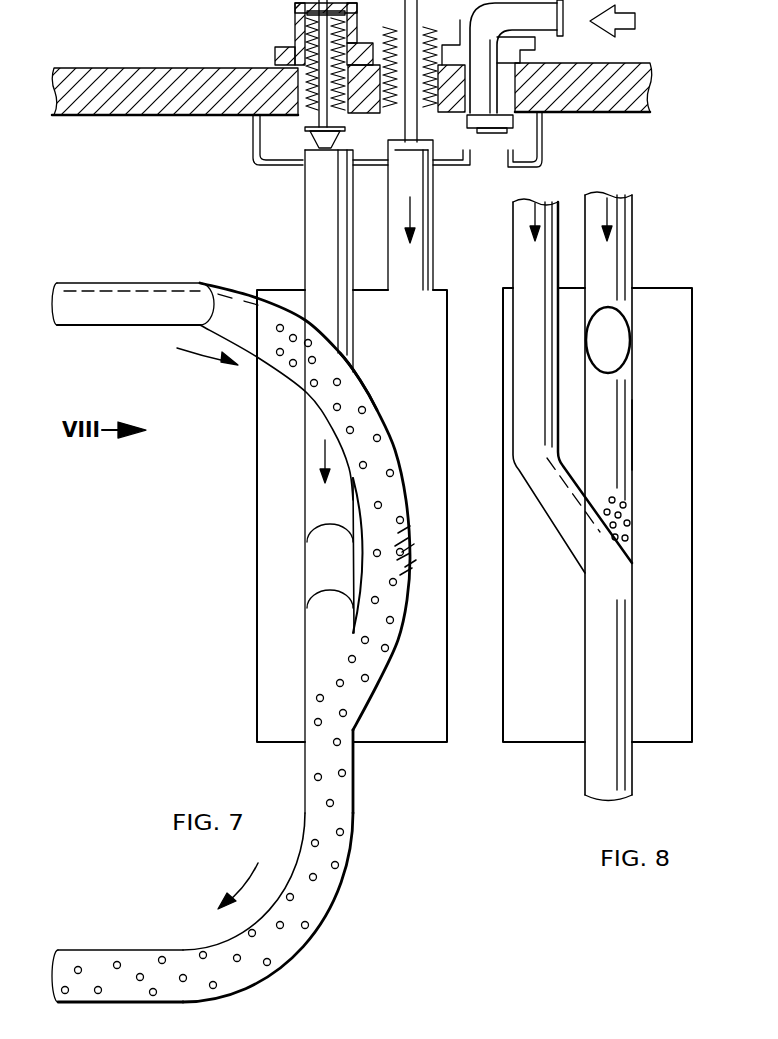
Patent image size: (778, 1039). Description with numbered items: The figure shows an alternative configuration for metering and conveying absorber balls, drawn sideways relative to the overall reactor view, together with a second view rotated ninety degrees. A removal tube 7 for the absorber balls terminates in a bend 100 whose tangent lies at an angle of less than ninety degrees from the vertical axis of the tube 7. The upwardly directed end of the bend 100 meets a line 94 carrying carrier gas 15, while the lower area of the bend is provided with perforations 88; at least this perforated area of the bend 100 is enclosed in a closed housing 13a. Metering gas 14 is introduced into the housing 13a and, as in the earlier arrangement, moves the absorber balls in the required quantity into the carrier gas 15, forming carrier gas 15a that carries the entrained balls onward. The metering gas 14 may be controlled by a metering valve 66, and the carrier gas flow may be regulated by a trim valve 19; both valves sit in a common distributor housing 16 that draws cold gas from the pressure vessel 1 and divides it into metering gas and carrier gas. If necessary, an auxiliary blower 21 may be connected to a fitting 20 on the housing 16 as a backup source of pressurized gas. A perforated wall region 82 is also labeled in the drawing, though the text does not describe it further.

In FIG. 7, the pressure vessel 1 is at (598, 93).
In FIG. 7, the removal tube 7 is at (98, 283).
In FIG. 8, the removal tube 7 is at (628, 318).
In FIG. 7, the closed housing 13a is at (447, 742).
In FIG. 8, the closed housing 13a is at (501, 740).
In FIG. 7, the metering gas 14 is at (410, 201).
In FIG. 8, the metering gas 14 is at (607, 208).
In FIG. 7, the carrier gas 15 is at (312, 452).
In FIG. 8, the carrier gas 15 is at (513, 208).
In FIG. 7, the carrier gas with entrained balls 15a is at (139, 906).
In FIG. 7, the distributor housing 16 is at (253, 137).
In FIG. 7, the trim valve 19 is at (321, 38).
In FIG. 7, the fitting 20 is at (502, 58).
In FIG. 7, the auxiliary blower 21 is at (694, 9).
In FIG. 7, the metering valve 66 is at (460, 0).
In FIG. 7, the perforated wall 82 is at (378, 455).
In FIG. 7, the perforations 88 is at (445, 486).
In FIG. 8, the perforations 88 is at (679, 519).
In FIG. 7, the line 94 is at (340, 758).
In FIG. 7, the bend 100 is at (367, 390).
In FIG. 8, the bend 100 is at (613, 432).